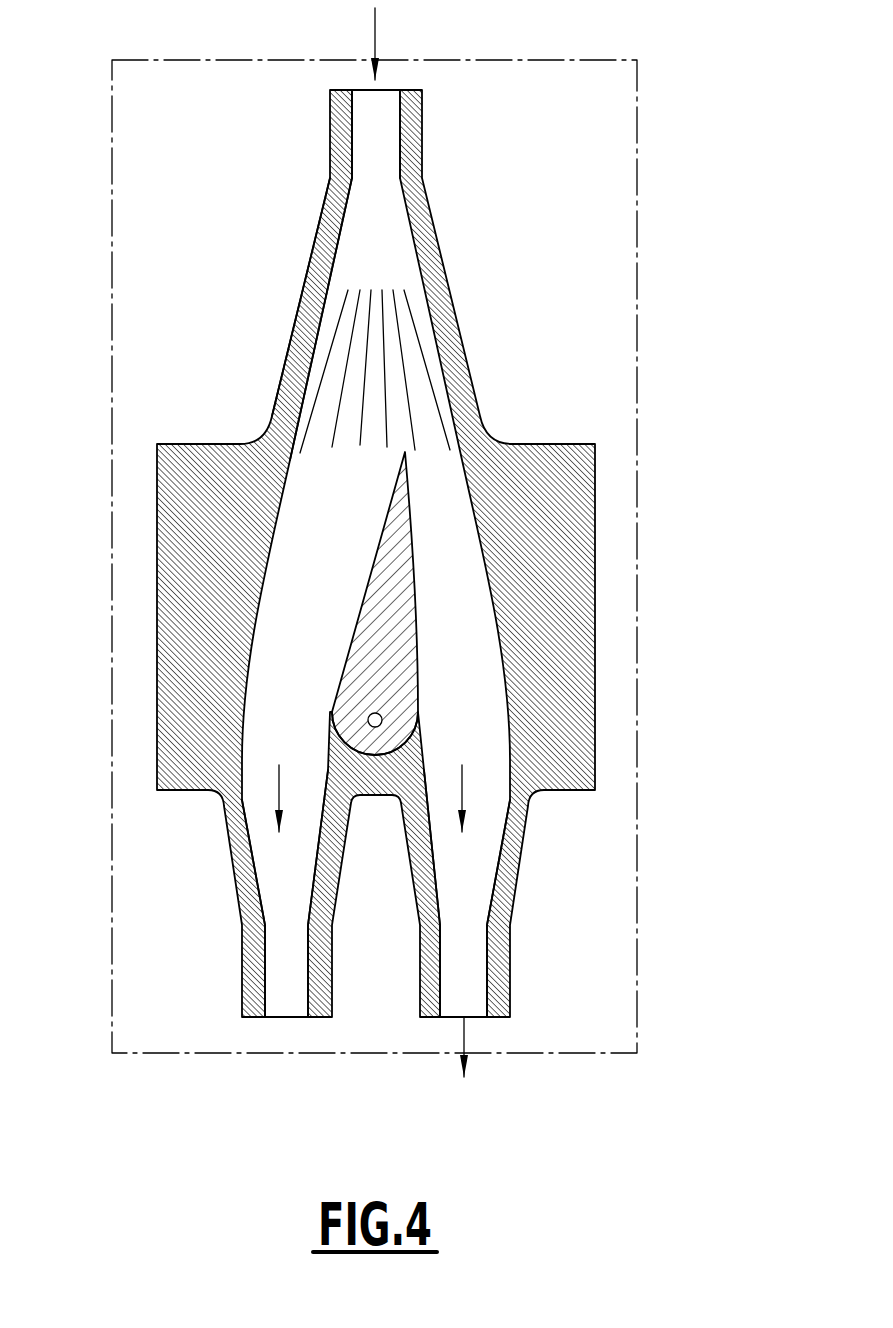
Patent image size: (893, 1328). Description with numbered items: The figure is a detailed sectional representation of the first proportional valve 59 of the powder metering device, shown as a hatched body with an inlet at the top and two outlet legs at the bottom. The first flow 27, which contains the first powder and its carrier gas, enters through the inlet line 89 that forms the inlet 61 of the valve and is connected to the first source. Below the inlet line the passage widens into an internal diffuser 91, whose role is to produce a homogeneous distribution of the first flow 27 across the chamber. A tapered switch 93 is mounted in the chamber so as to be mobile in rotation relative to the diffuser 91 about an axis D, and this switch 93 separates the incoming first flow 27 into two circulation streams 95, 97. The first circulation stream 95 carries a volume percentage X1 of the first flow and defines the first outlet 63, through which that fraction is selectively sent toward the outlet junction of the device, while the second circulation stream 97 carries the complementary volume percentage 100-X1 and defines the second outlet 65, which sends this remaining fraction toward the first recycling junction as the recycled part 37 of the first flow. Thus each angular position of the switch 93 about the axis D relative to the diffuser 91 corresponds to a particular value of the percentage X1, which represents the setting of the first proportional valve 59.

The first proportional valve 59 is at (170, 302).
The inlet 61 is at (358, 89).
The first flow 27 is at (377, 25).
The inlet line 89 is at (373, 107).
The internal diffuser 91 is at (316, 181).
The switch 93 is at (400, 555).
The volume percentage X1 is at (368, 720).
The axis D is at (287, 807).
The volume percentage 100-X1 is at (462, 790).
The circulation stream 95 is at (285, 897).
The circulation stream 97 is at (467, 897).
The first outlet 63 is at (287, 1017).
The second outlet 65 is at (477, 1017).
The recycled part of the first flow 37 is at (462, 1020).